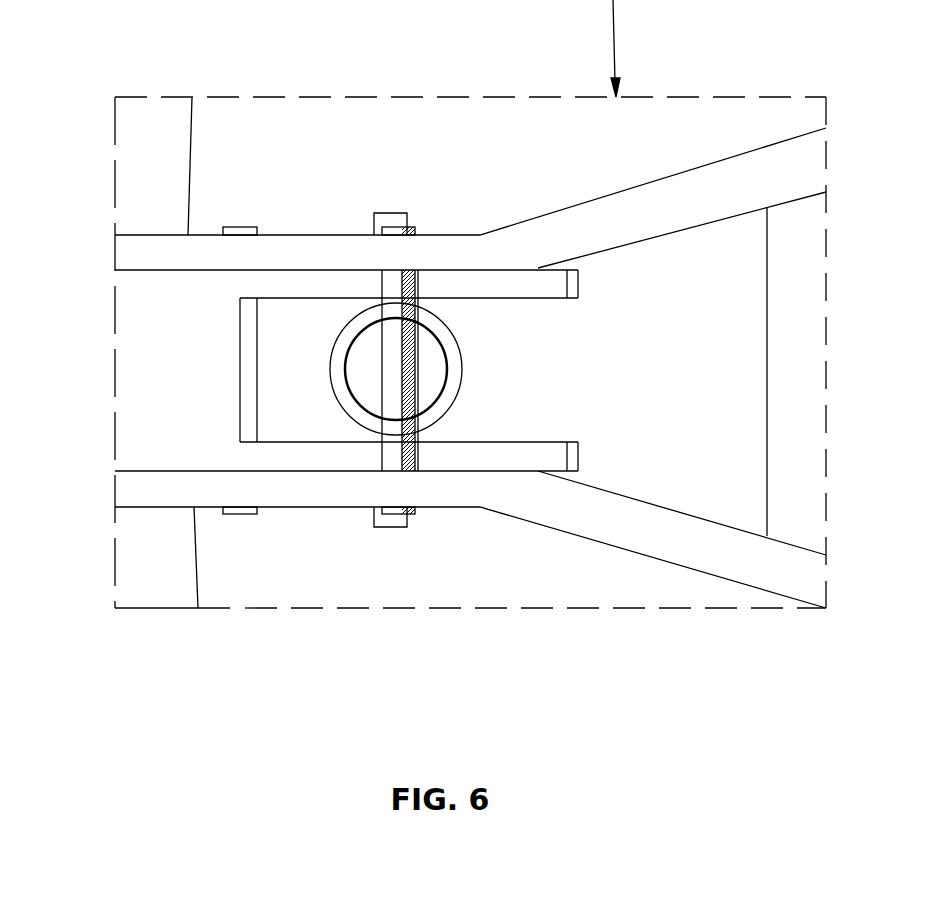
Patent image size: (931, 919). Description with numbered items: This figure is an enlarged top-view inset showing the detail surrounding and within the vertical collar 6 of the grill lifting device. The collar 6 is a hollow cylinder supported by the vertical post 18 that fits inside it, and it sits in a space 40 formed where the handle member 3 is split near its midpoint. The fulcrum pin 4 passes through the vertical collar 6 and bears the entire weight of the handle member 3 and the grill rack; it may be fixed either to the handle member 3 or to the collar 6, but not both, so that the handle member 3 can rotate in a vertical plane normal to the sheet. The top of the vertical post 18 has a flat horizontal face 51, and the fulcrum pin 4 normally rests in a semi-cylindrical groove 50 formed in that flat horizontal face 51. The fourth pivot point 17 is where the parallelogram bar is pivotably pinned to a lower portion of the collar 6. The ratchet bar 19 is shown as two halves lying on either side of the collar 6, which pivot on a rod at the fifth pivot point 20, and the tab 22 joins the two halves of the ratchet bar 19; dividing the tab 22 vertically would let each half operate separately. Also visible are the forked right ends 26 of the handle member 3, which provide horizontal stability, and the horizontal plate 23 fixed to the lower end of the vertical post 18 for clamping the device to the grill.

The handle member 3 is at (280, 180).
The fulcrum pin 4 is at (392, 375).
The vertical collar 6 is at (450, 372).
The fourth pivot point 17 is at (402, 518).
The vertical post 18 is at (347, 367).
The ratchet bar 19 is at (282, 283).
The fifth pivot point 20 is at (253, 417).
The tab 22 is at (164, 386).
The horizontal plate 23 is at (325, 173).
The right end of the handle member 26 is at (642, 533).
The space 40 is at (499, 344).
The semi-cylindrical groove 50 is at (422, 408).
The flat horizontal face 51 is at (365, 367).